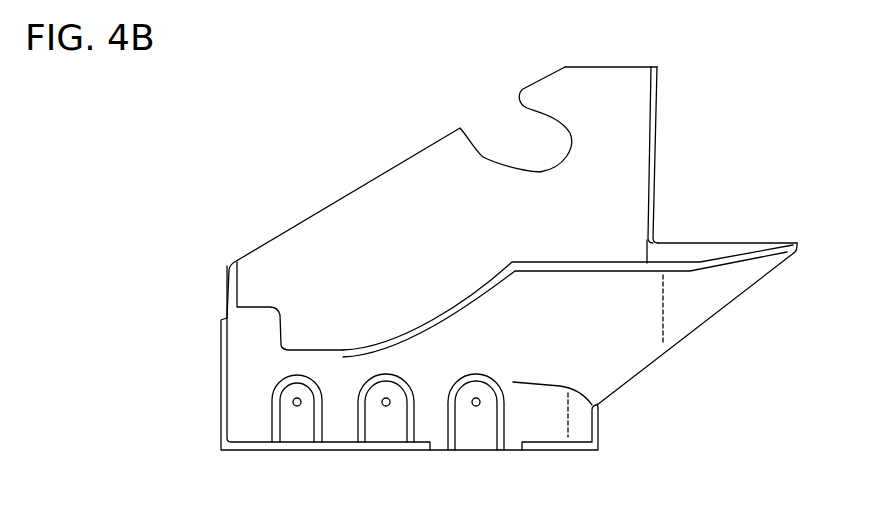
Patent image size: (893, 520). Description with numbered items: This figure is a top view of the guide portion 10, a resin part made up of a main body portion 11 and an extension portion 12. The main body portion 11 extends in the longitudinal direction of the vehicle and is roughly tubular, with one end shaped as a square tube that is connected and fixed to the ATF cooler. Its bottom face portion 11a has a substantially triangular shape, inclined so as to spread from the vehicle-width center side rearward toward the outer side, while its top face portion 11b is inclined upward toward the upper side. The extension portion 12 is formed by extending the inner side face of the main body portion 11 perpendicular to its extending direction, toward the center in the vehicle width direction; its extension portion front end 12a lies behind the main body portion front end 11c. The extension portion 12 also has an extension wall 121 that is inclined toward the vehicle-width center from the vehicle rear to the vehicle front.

The guide portion 10 is at (424, 90).
The main body portion 11 is at (391, 180).
The bottom face portion 11a is at (275, 254).
The top face portion 11b is at (440, 330).
The main body portion front end 11c is at (620, 67).
The extension portion 12 is at (740, 282).
The extension portion front end 12a is at (733, 243).
The extension wall 121 is at (693, 332).